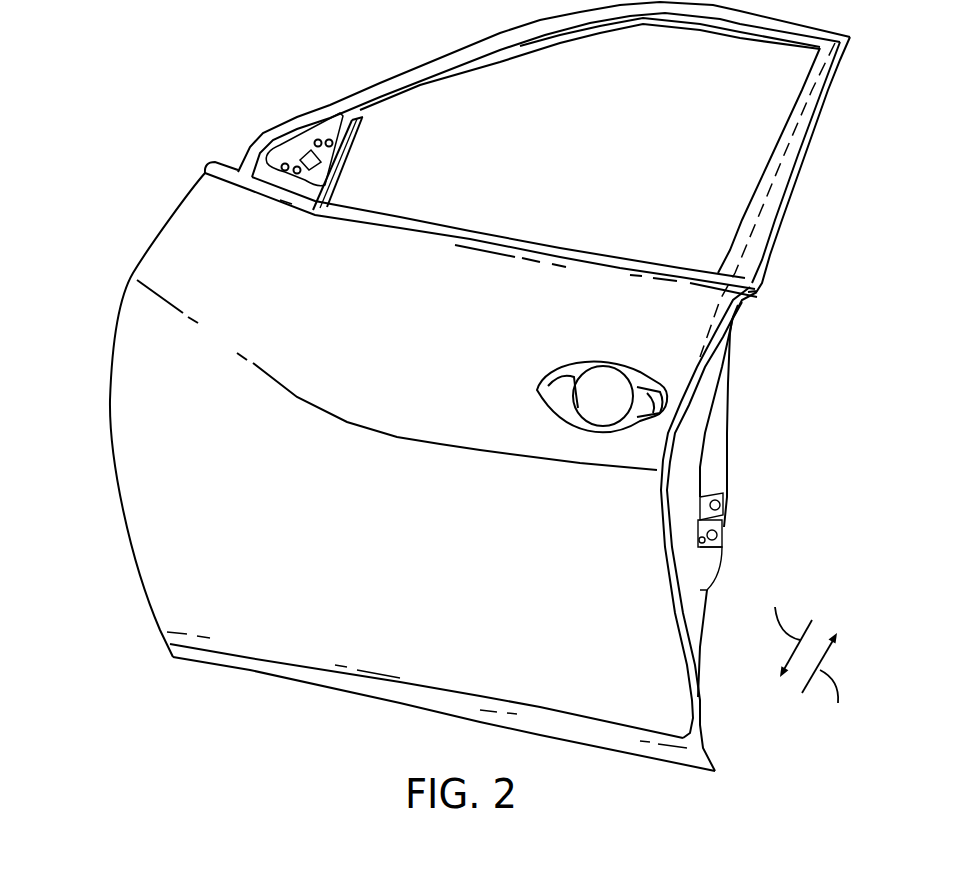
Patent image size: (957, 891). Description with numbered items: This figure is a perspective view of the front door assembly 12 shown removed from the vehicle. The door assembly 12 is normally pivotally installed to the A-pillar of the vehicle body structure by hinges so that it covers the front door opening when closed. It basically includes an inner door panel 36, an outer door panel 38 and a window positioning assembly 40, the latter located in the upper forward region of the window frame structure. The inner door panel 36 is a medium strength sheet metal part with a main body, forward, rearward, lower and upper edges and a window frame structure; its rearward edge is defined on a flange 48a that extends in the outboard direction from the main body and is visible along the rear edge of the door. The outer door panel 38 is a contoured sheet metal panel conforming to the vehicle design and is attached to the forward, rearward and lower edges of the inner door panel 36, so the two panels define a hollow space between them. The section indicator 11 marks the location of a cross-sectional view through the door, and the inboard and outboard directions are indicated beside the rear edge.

The door assembly 12 is at (118, 230).
The section line 11- 11 is at (518, 230).
The inner door panel 36 is at (727, 417).
The outer door panel 38 is at (188, 535).
The window positioning assembly 40 is at (355, 167).
The flange 48a is at (682, 465).